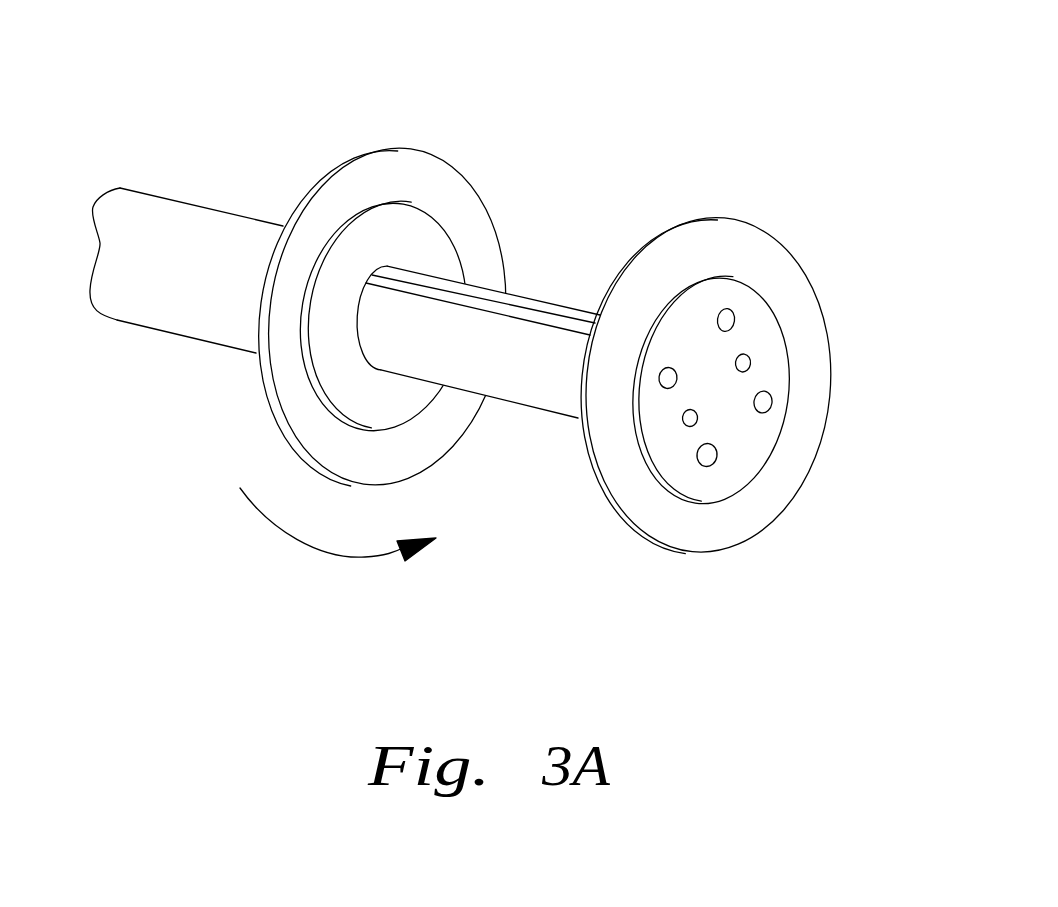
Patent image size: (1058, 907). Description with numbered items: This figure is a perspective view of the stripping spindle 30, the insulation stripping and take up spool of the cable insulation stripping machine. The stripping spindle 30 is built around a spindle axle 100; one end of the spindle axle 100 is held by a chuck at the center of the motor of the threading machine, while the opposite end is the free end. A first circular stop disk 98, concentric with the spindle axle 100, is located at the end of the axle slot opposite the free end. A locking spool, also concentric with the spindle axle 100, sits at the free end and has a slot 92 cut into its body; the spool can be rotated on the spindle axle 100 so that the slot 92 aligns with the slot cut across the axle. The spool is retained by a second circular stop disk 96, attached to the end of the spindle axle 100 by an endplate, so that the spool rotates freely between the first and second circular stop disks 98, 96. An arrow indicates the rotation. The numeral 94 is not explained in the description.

The stripping spindle 30 is at (732, 110).
The slot 92 is at (548, 318).
The central opening of disk 94 is at (372, 333).
The second circular stop disk 96 is at (805, 303).
The first circular stop disk 98 is at (487, 228).
The spindle axle 100 is at (150, 213).